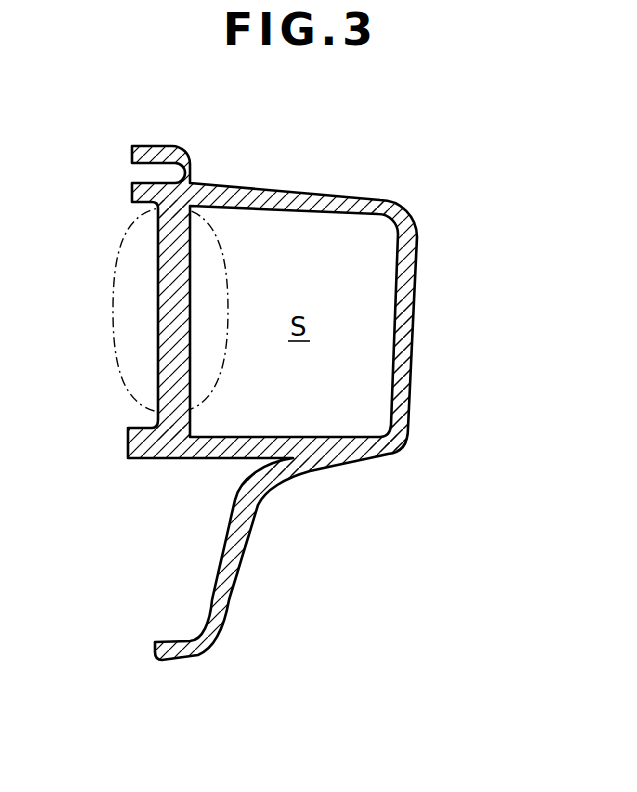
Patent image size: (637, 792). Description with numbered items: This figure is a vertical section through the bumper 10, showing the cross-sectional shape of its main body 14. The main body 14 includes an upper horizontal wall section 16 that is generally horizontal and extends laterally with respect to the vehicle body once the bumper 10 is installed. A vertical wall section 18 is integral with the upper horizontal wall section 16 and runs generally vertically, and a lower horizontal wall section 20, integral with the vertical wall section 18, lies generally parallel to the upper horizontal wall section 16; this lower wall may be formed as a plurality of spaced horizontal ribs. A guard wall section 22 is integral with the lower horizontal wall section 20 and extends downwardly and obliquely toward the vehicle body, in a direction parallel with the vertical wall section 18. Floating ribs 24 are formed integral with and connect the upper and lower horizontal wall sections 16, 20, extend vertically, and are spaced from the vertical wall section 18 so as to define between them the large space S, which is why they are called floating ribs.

The bumper 10 is at (372, 187).
The main body 14 is at (413, 360).
The upper horizontal wall section 16 is at (262, 191).
The vertical wall section 18 is at (417, 264).
The lower horizontal wall section 20 is at (187, 458).
The guard wall section 22 is at (230, 597).
The floating rib 24 is at (158, 300).